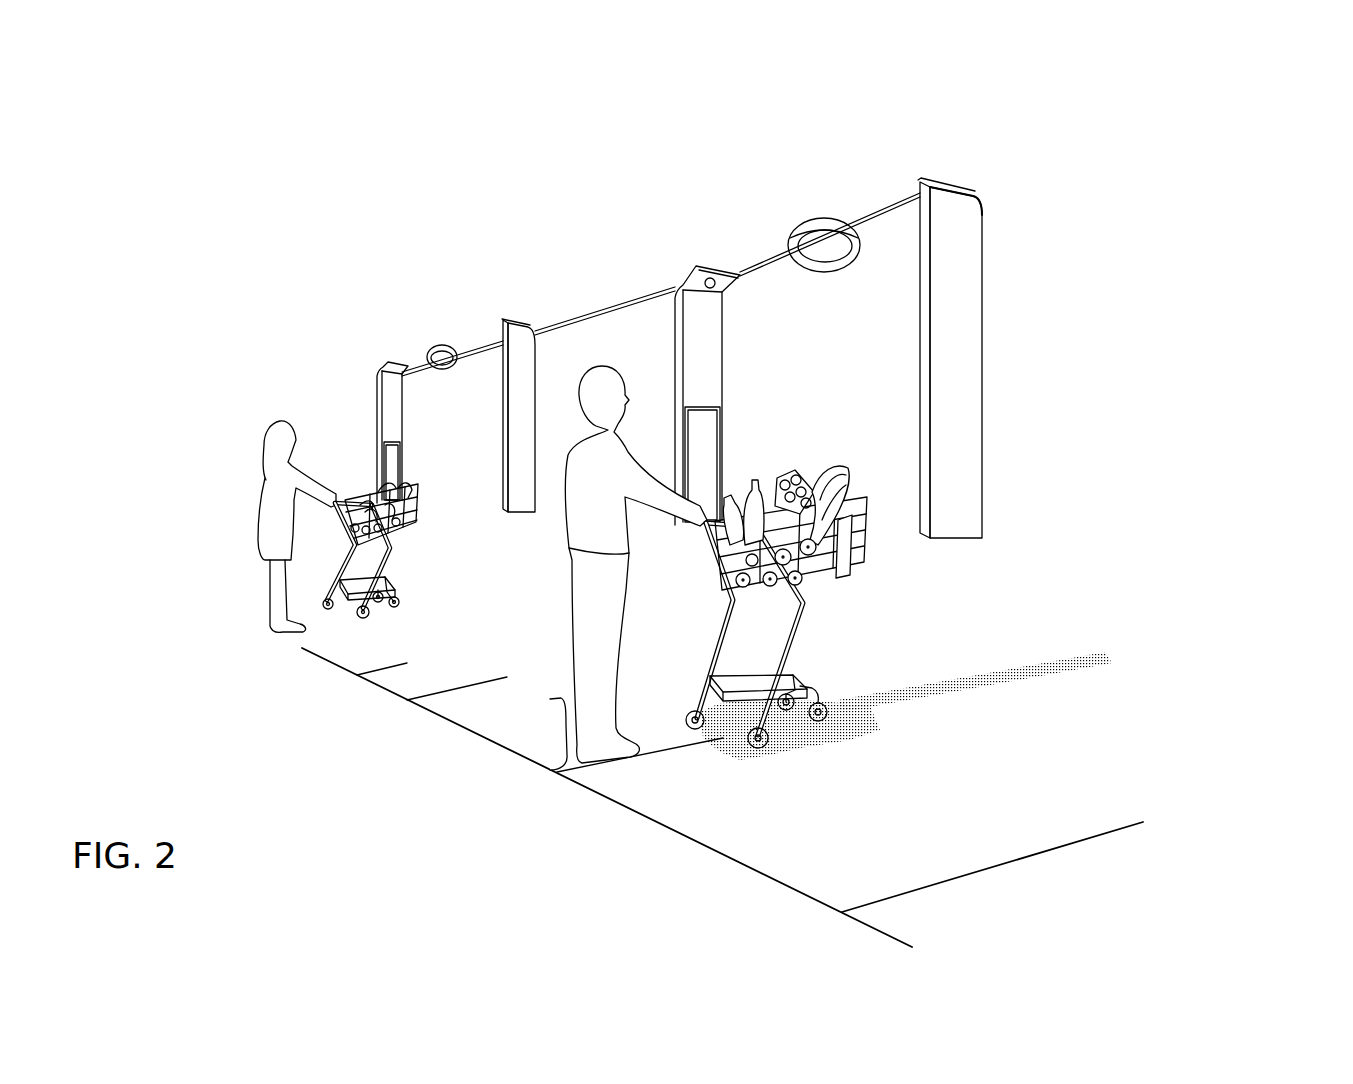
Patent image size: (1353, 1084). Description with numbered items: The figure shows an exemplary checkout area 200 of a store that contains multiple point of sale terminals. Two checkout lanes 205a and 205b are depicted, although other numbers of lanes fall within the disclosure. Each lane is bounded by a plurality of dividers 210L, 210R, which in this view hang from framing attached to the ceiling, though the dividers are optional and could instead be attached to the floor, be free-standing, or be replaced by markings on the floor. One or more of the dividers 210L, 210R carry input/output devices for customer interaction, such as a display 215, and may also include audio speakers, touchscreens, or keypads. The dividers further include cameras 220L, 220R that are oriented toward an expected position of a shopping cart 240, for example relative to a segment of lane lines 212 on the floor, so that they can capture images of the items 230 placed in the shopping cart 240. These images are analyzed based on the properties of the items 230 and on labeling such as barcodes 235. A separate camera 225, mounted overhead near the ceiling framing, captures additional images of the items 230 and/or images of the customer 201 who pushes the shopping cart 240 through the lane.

The checkout area 200 is at (1235, 148).
The customer 201 is at (568, 702).
The checkout lane 205a is at (881, 295).
The checkout lane 205b is at (457, 289).
The divider 210L is at (765, 395).
The divider 210R is at (980, 283).
The lane lines 212 is at (649, 822).
The display 215 is at (708, 421).
The camera 220L is at (717, 284).
The camera 220R is at (957, 181).
The separate camera 225 is at (820, 217).
The items 230 is at (754, 474).
The barcodes 235 is at (838, 560).
The shopping cart 240 is at (899, 579).